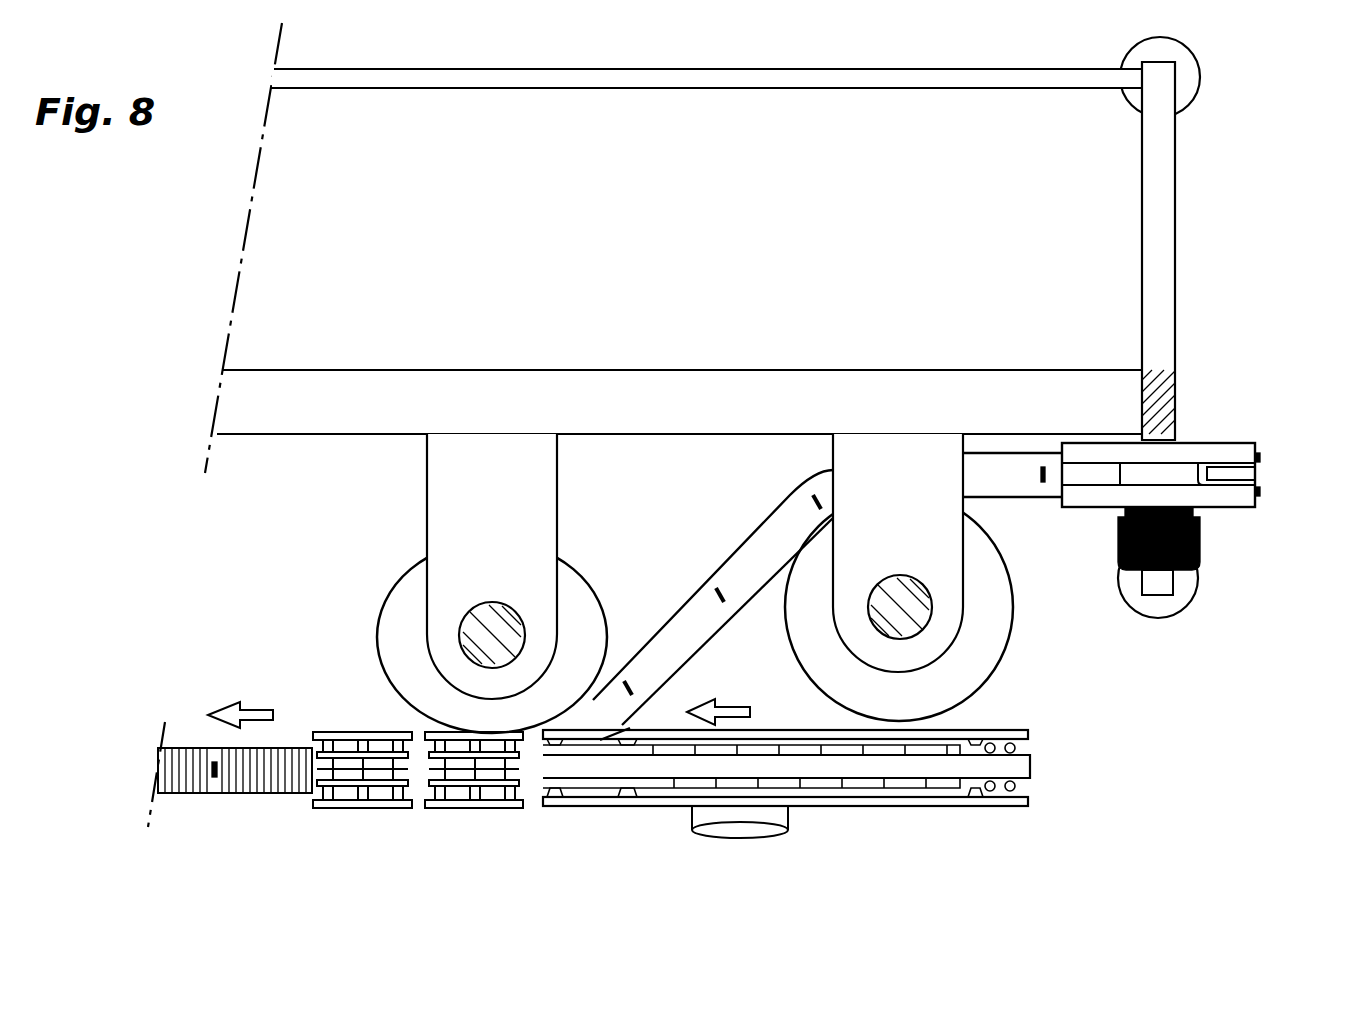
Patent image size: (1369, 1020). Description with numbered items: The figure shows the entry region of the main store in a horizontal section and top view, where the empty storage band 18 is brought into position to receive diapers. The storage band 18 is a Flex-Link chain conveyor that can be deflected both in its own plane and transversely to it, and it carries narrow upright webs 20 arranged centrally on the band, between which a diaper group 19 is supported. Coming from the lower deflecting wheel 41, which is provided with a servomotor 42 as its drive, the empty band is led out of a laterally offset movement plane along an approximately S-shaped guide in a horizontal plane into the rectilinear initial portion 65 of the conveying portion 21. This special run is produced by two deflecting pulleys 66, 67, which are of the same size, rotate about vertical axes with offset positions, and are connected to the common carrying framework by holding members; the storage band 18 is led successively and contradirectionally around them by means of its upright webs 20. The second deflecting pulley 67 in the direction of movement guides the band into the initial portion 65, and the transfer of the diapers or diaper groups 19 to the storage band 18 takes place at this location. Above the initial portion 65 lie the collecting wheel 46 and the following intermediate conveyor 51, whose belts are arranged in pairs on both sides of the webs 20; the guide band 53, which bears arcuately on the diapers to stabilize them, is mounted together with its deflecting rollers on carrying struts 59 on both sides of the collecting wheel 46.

The storage band 18 is at (753, 558).
The diaper group 19 is at (278, 758).
The web 20 is at (1044, 466).
The conveying portion 21 is at (188, 688).
The deflecting wheel 41 is at (1210, 453).
The servomotor 42 is at (1200, 550).
The collecting wheel 46 is at (845, 797).
The intermediate conveyor 51 is at (452, 840).
The guide band 53 is at (1022, 766).
The carrying strut 59 is at (1028, 735).
The initial portion 65 is at (243, 827).
The deflecting pulley 66 is at (980, 637).
The deflecting pulley 67 is at (583, 607).